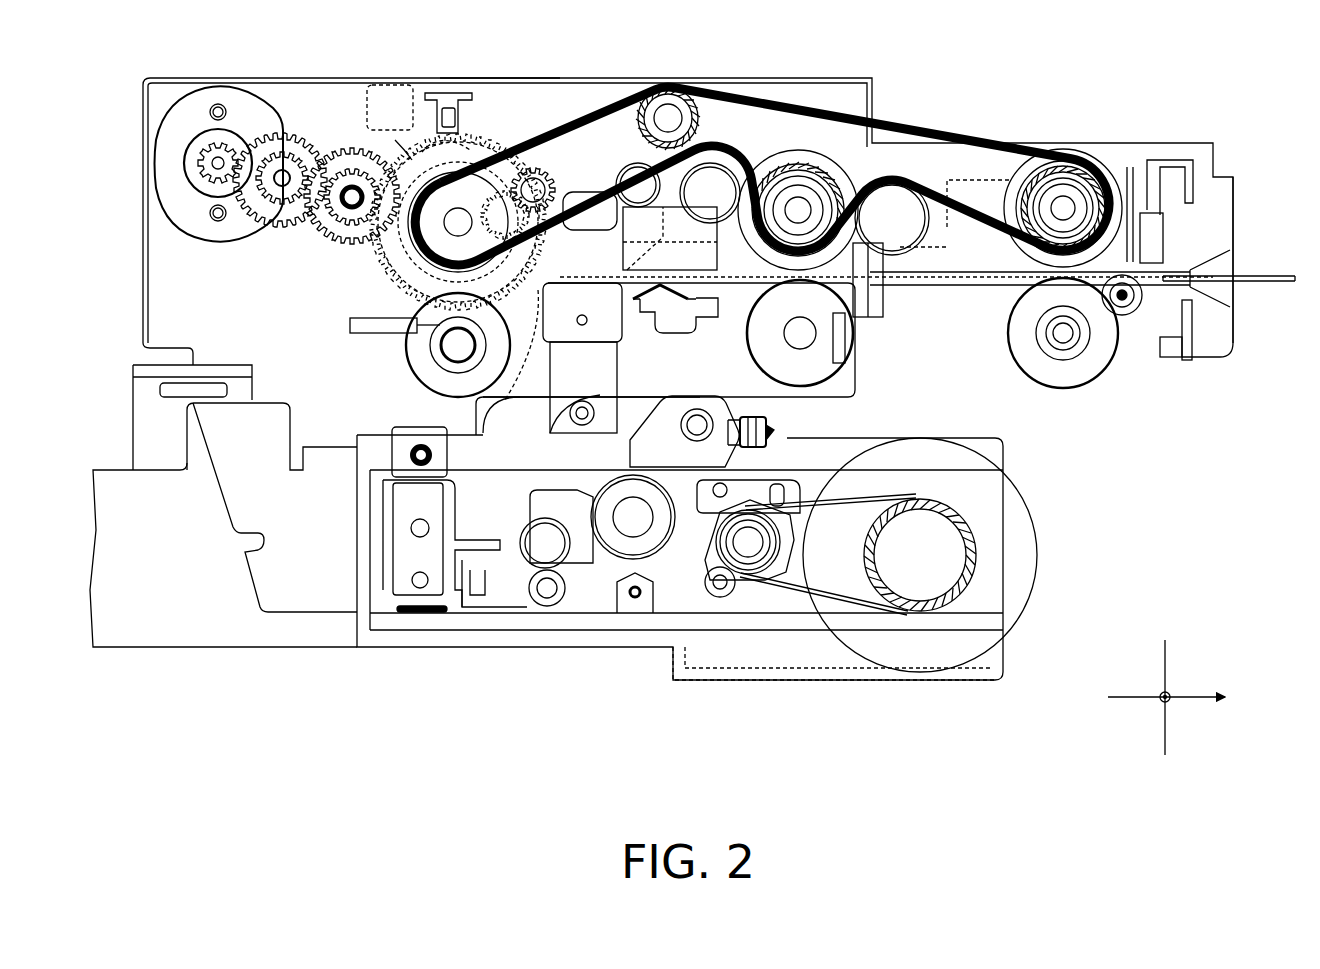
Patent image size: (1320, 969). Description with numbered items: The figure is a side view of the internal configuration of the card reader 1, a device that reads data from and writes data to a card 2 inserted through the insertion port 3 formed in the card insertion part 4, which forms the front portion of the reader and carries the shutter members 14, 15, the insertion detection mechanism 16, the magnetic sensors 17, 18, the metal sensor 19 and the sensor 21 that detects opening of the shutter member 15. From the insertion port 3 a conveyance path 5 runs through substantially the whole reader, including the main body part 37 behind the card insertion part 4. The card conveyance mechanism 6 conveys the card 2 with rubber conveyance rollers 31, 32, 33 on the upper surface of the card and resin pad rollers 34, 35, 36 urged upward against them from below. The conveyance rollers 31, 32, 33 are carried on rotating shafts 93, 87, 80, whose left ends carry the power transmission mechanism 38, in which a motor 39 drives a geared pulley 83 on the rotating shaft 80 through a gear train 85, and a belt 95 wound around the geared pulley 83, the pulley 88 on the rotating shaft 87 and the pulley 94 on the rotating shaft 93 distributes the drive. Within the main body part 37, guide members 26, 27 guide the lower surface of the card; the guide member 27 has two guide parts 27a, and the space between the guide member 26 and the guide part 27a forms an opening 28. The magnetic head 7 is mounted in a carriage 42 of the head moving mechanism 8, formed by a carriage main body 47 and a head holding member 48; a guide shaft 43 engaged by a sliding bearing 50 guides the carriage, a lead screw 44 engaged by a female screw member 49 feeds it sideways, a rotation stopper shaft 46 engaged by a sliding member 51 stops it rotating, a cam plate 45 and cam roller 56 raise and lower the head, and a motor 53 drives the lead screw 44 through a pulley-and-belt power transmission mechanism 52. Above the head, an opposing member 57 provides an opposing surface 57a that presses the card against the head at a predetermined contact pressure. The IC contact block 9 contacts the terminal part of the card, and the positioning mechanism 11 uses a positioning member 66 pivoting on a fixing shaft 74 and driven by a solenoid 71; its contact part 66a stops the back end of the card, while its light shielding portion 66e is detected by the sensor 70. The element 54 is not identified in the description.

The card reader 1 is at (1240, 60).
The card 2 is at (890, 232).
The insertion port 3 is at (1240, 280).
The card insertion part 4 is at (980, 150).
The conveyance path 5 is at (975, 286).
The card conveyance mechanism 6 is at (843, 88).
The magnetic head 7 is at (582, 290).
The head moving mechanism 8 is at (826, 705).
The IC contact block 9 is at (712, 258).
The positioning mechanism 11 is at (488, 98).
The shutter member 14 is at (880, 300).
The shutter member 15 is at (1122, 316).
The insertion detection mechanism 16 is at (1186, 155).
The magnetic sensor 17 is at (1130, 180).
The magnetic sensor 18 is at (1185, 360).
The metal sensor 19 is at (1165, 240).
The sensor 21 is at (1172, 360).
The guide member 26 is at (690, 290).
The guide member 27 is at (350, 325).
The guide part 27a is at (485, 418).
The opening 28 is at (534, 328).
The conveyance roller 31 is at (1060, 150).
The conveyance roller 32 is at (800, 150).
The conveyance roller 33 is at (400, 250).
The pad roller 34 is at (1050, 376).
The pad roller 35 is at (850, 360).
The pad roller 36 is at (407, 345).
The main body part 37 is at (520, 110).
The power transmission mechanism 38 is at (318, 150).
The motor 39 is at (233, 90).
The carriage 42 is at (545, 440).
The guide shaft 43 is at (630, 560).
The lead screw 44 is at (750, 578).
The cam plate 45 is at (790, 480).
The rotation stopper shaft 46 is at (550, 607).
The carriage main body 47 is at (530, 505).
The head holding member 48 is at (548, 438).
The female screw member 49 is at (720, 598).
The sliding bearing 50 is at (650, 615).
The sliding member 51 is at (505, 612).
The power transmission mechanism 52 is at (787, 662).
The motor 53 is at (1037, 555).
The arm 54 is at (690, 400).
The cam roller 56 is at (750, 415).
The opposing member 57 is at (582, 215).
The opposing surface 57a is at (620, 330).
The positioning member 66 is at (412, 300).
The contact part 66a is at (437, 300).
The light shielding portion 66e is at (437, 120).
The sensor 70 is at (462, 113).
The solenoid 71 is at (392, 85).
The fixing shaft 74 is at (530, 195).
The rotating shaft 80 is at (445, 232).
The geared pulley 83 is at (400, 142).
The gear train 85 is at (262, 262).
The rotating shaft 87 is at (815, 195).
The pulley 88 is at (775, 175).
The rotating shaft 93 is at (1065, 200).
The pulley 94 is at (1010, 178).
The belt 95 is at (690, 100).